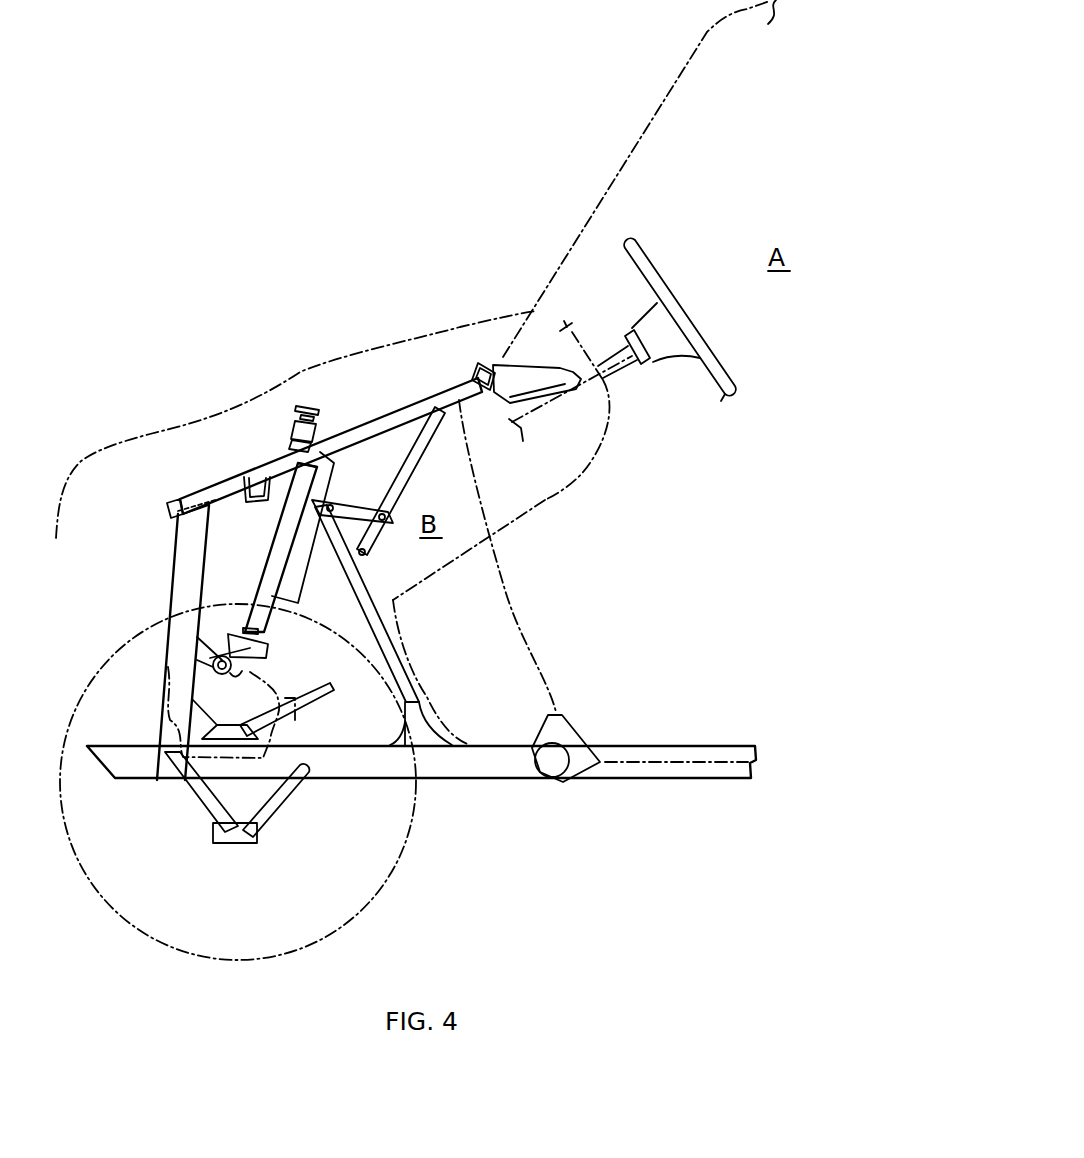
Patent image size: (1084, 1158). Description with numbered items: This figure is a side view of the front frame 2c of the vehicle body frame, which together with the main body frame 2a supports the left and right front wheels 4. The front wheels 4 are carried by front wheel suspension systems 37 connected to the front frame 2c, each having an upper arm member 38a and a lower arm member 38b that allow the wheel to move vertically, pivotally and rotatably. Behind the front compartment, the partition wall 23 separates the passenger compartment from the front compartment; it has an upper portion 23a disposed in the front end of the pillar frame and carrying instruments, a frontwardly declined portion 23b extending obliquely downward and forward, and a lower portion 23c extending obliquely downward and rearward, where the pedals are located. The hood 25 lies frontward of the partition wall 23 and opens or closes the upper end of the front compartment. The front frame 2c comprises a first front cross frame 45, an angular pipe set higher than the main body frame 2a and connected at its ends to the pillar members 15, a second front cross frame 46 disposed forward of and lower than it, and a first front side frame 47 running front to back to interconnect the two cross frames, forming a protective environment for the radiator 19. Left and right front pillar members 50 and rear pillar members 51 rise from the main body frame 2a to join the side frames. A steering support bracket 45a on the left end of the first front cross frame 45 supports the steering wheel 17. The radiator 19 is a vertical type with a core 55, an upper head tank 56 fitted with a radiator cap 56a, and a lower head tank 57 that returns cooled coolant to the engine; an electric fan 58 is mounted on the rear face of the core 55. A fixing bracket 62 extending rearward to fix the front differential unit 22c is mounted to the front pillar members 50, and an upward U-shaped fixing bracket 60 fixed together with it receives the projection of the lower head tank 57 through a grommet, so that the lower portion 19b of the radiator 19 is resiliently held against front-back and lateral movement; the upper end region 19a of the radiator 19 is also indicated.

The main body frame 2a is at (498, 784).
The front frame 2c is at (207, 473).
The front wheel 4 is at (77, 707).
The pillar member 15 is at (630, 150).
The steering wheel 17 is at (648, 323).
The radiator 19 is at (189, 482).
The tube upper end 19a is at (296, 443).
The lower portion of the radiator 19b is at (245, 610).
The front differential unit 22c is at (170, 690).
The partition wall 23 is at (573, 485).
The upper portion 23a is at (612, 389).
The frontwardly declined portion 23b is at (463, 557).
The lower portion 23c is at (412, 661).
The hood 25 is at (127, 438).
The front wheel suspension system 37 is at (277, 807).
The upper arm member 38a is at (337, 683).
The lower arm member 38b is at (283, 815).
The first front cross frame 45 is at (472, 363).
The steering support bracket 45a is at (540, 363).
The second front cross frame 46 is at (240, 502).
The first front side frame 47 is at (392, 412).
The front pillar member 50 is at (173, 580).
The rear pillar member 51 is at (372, 585).
The core 55 is at (303, 603).
The upper head tank 56 is at (333, 384).
The radiator cap 56a is at (307, 400).
The lower head tank 57 is at (268, 641).
The electric fan 58 is at (307, 560).
The fixing bracket 60 is at (250, 670).
The fixing bracket 62 is at (192, 640).